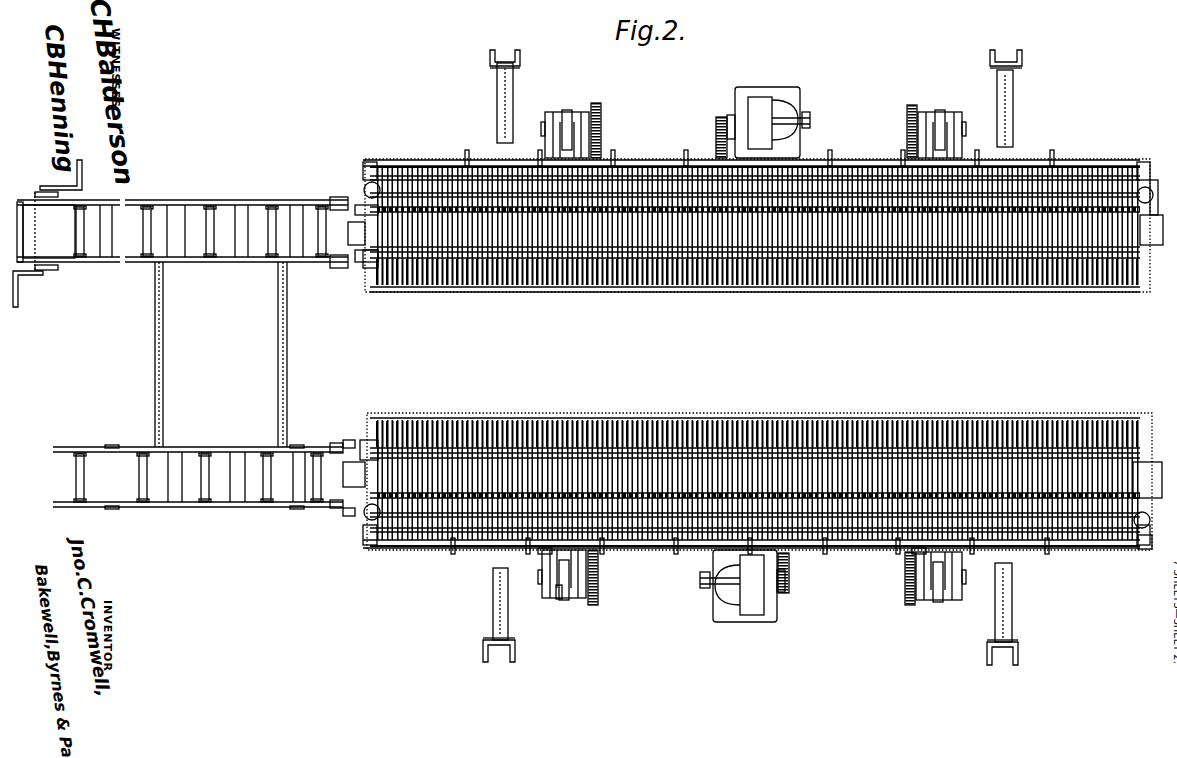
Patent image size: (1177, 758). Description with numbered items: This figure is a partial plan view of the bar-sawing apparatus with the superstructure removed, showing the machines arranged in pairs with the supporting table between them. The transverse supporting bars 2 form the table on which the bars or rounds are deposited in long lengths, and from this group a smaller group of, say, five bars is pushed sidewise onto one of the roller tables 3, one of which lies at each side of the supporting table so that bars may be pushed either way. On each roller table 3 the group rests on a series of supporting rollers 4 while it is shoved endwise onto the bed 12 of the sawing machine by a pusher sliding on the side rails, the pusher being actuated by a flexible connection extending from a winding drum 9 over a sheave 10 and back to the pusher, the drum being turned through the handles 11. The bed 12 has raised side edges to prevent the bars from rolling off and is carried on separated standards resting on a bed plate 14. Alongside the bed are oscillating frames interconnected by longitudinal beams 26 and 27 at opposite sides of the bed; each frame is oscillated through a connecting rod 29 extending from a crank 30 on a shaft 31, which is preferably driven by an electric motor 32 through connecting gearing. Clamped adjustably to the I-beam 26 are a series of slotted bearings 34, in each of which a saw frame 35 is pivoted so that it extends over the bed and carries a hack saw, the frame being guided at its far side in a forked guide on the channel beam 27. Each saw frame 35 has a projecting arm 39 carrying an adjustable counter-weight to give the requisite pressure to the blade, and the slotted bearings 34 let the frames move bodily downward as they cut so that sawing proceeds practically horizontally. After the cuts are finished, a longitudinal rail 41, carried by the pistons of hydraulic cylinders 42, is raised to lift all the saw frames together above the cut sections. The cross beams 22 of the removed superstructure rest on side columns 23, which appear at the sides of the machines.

The transverse supporting bars 2 is at (155, 353).
The roller table 3 is at (216, 202).
The supporting rollers 4 is at (84, 232).
The winding drum 9 is at (47, 192).
The sheave 10 is at (333, 198).
The handles 11 is at (82, 171).
The bed of the sawing machine 12 is at (600, 240).
The bed plate 14 is at (566, 120).
The cross beams 22 is at (497, 101).
The side columns 23 is at (490, 56).
The longitudinal beam 26 is at (390, 166).
The longitudinal beam 27 is at (515, 282).
The connecting rod 29 is at (545, 556).
The crank 30 is at (556, 592).
The shaft 31 is at (602, 127).
The electric motor 32 is at (758, 118).
The slotted bearings 34 is at (365, 164).
The saw frame 35 is at (430, 175).
The projecting arm 39 is at (398, 288).
The longitudinal rail 41 is at (655, 170).
The hydraulic cylinders 42 is at (366, 190).